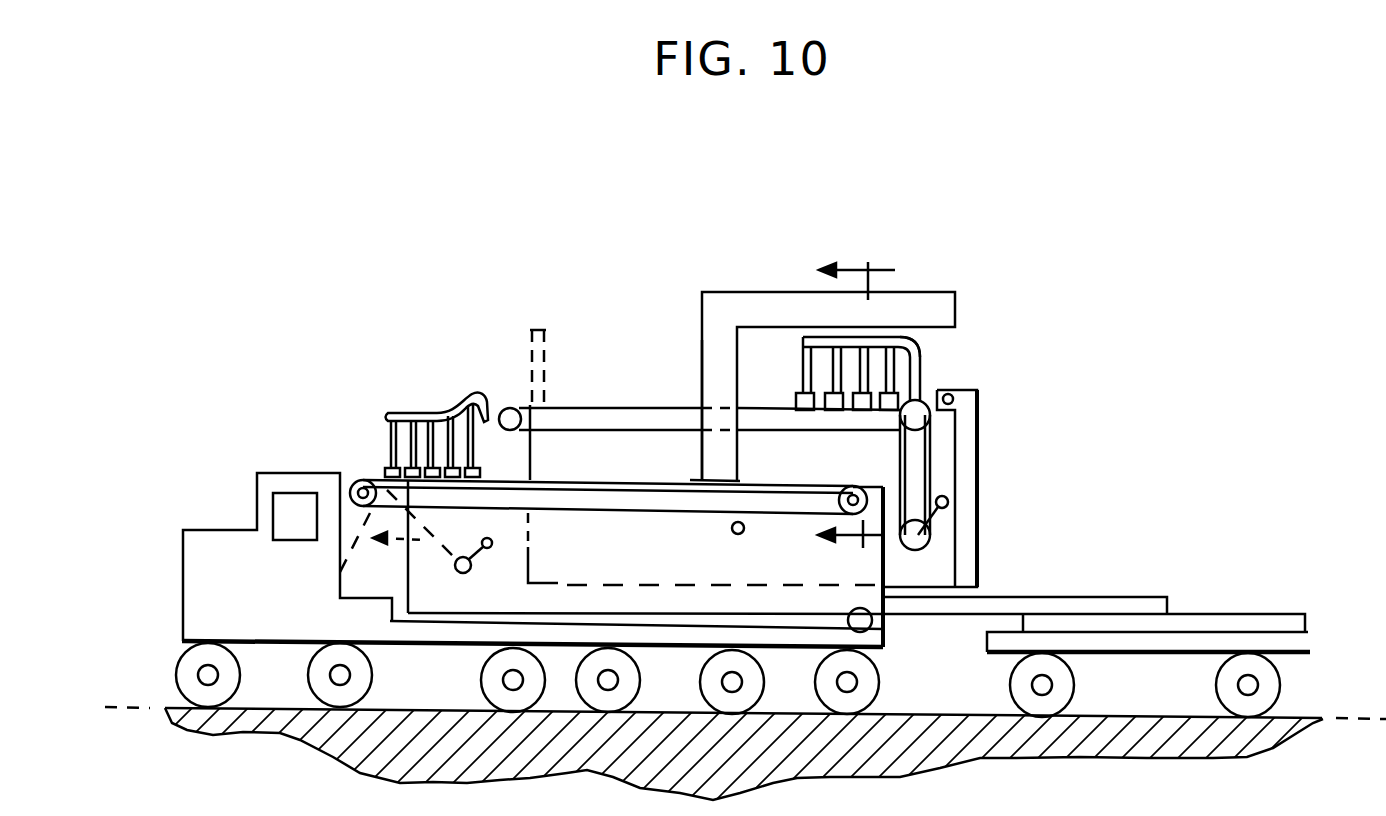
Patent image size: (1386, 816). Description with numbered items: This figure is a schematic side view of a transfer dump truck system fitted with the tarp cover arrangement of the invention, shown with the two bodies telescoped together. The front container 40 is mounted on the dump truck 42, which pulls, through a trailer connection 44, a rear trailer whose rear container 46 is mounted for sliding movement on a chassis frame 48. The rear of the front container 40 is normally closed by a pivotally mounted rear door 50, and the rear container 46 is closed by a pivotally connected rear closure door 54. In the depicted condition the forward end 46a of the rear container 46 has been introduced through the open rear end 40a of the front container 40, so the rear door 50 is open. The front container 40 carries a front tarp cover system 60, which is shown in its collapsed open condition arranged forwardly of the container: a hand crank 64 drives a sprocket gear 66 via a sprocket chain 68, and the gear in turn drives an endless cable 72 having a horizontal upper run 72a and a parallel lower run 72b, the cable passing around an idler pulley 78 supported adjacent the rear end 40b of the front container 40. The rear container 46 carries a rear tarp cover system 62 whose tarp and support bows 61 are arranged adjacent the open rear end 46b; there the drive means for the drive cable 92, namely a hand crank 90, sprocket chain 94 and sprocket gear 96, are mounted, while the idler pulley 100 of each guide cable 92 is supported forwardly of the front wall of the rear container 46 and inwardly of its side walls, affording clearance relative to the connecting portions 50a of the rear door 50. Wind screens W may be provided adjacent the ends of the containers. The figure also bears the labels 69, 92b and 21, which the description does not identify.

The front container 40 is at (683, 594).
The open rear end of front container 40a is at (492, 597).
The rear end of front container 40b is at (798, 605).
The dump truck 42 is at (208, 545).
The trailer connection 44 is at (925, 617).
The rear container 46 is at (637, 474).
The forward end of rear container 46a is at (571, 465).
The open rear end of rear container 46b is at (938, 460).
The chassis frame 48 is at (1207, 617).
The rear door 50 is at (930, 303).
The connecting portions of rear door 50a is at (706, 357).
The rear closure door 54 is at (963, 518).
The front tarp cover system 60 is at (419, 373).
The support bows 61 is at (893, 365).
The rear tarp cover system 62 is at (991, 343).
The hand crank 64 is at (461, 575).
The sprocket gear 66 is at (355, 483).
The sprocket chain 68 is at (325, 585).
The gripper fingers 69 is at (390, 440).
The endless cable 72 is at (754, 476).
The upper run of endless cable 72a is at (712, 495).
The lower run of endless cable 72b is at (565, 560).
The idler pulley 78 is at (851, 486).
The hand crank 90 is at (925, 540).
The drive cable 92 is at (617, 405).
The rail pivot 92b is at (732, 531).
The sprocket chain 94 is at (934, 478).
The sprocket gear 96 is at (931, 423).
The idler pulley 100 is at (499, 406).
The wind screens W is at (555, 342).
The section line indicator 21 is at (866, 409).